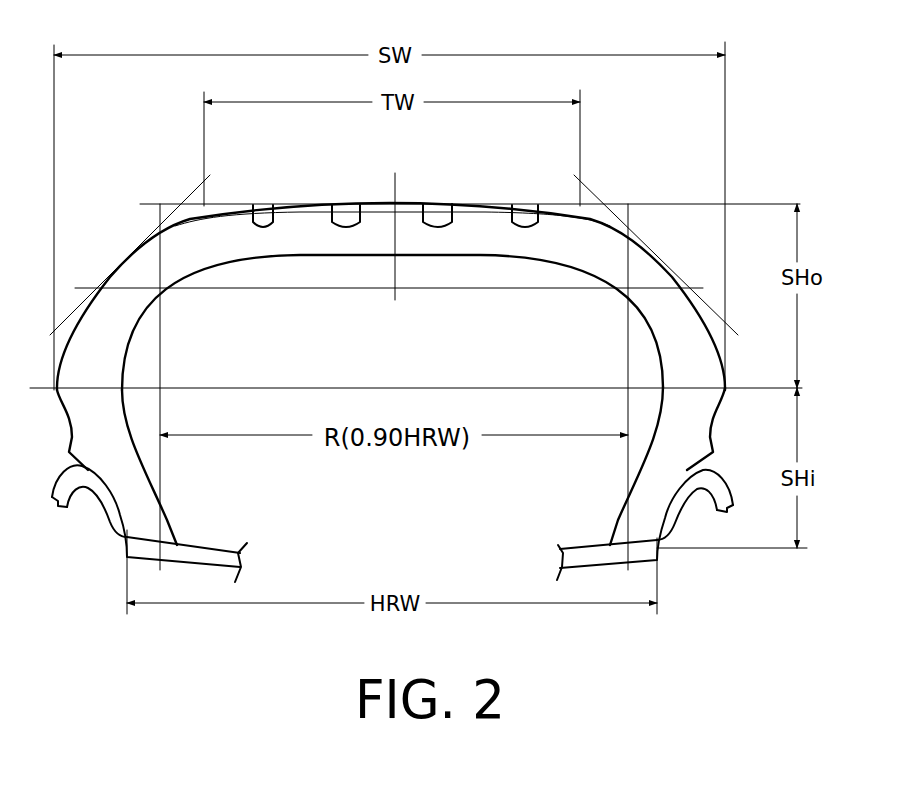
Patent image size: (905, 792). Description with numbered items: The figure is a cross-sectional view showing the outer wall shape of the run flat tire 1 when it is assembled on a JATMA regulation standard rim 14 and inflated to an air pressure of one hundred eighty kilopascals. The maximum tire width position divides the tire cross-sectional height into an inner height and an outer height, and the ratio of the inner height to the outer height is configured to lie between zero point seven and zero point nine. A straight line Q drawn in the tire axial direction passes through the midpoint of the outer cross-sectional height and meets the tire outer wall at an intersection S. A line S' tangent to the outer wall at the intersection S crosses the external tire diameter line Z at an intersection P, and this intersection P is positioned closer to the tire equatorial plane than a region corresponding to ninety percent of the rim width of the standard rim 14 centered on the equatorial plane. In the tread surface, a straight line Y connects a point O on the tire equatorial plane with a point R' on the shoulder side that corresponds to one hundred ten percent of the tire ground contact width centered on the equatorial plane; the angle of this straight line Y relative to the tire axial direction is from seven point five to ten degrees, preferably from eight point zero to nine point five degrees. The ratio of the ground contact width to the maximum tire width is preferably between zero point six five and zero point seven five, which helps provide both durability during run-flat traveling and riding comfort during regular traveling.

The run flat tire 1 is at (677, 112).
The standard rim 14 is at (112, 529).
The intersection of straight line Q and tire outer wall S is at (393, 247).
The tangent line S' is at (398, 161).
The intersection of tangent line S' and external tire diameter line Z P is at (183, 203).
The point on the tire equatorial plane O is at (397, 202).
The external tire diameter line Z is at (685, 198).
The point on shoulder side R' is at (393, 285).
The straight line connecting points O and R' Y is at (290, 212).
The straight line in the tire axial direction Q is at (372, 289).